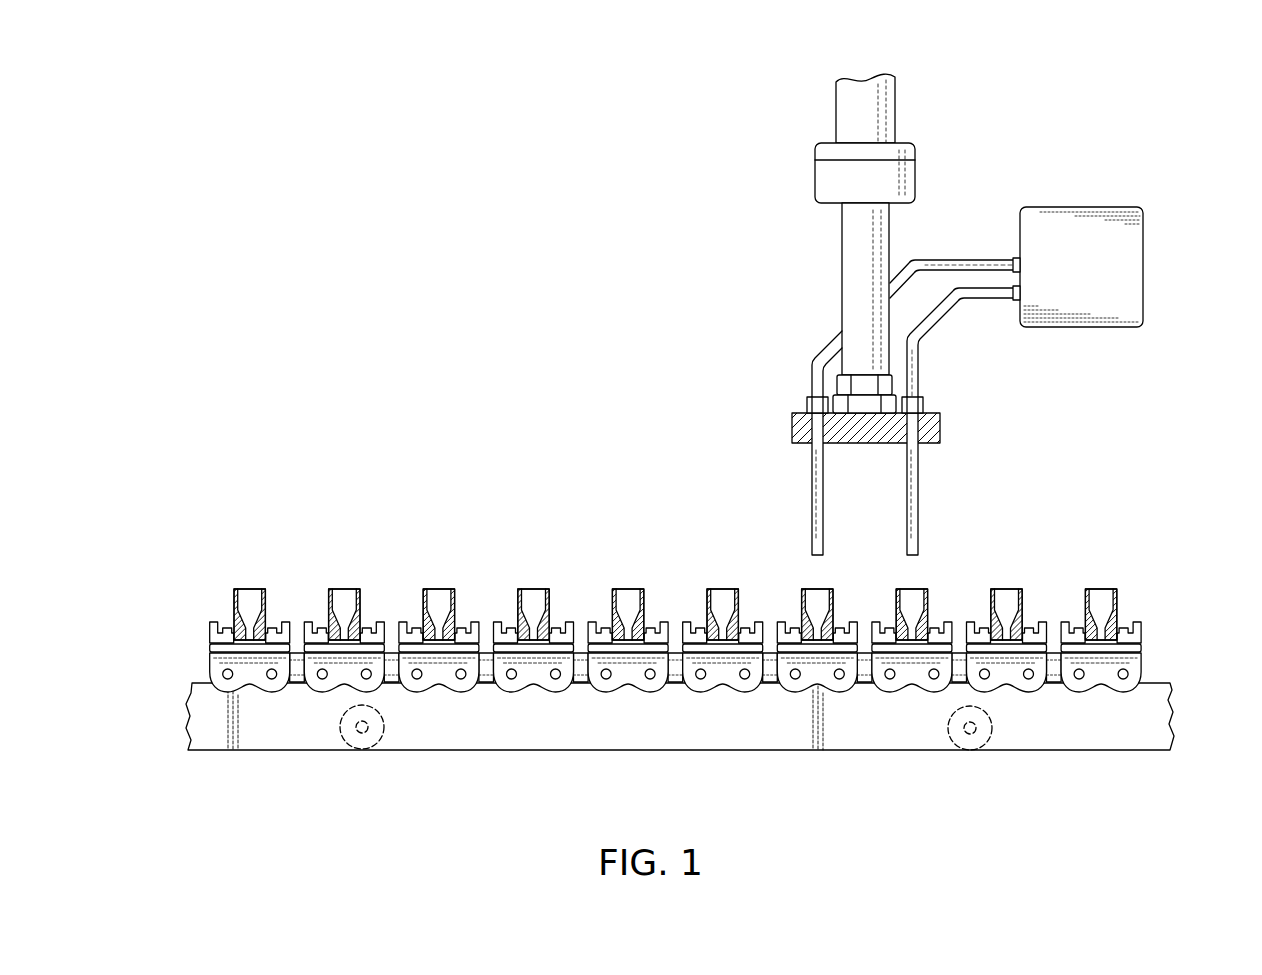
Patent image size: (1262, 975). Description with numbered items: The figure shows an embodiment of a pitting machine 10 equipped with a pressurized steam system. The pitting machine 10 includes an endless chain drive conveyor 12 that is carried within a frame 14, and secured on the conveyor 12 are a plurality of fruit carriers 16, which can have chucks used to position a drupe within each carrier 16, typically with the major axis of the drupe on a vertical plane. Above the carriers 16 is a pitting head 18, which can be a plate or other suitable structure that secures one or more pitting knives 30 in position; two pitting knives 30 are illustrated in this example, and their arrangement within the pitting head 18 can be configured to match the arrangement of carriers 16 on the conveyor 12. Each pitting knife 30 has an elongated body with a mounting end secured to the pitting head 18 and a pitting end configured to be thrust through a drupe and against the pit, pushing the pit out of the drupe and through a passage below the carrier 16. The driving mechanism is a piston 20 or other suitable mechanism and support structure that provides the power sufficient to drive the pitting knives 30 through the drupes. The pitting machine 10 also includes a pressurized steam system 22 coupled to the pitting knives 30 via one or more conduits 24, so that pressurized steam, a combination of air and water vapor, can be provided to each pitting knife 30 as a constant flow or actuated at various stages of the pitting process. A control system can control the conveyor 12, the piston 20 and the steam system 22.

The pitting machine 10 is at (1114, 131).
The endless chain drive conveyor 12 is at (1147, 661).
The frame 14 is at (900, 744).
The fruit carriers 16 is at (1118, 611).
The pitting head 18 is at (933, 432).
The piston 20 is at (846, 274).
The pressurized steam system 22 is at (1143, 258).
The conduits 24 is at (943, 258).
The pitting knives 30 is at (918, 490).